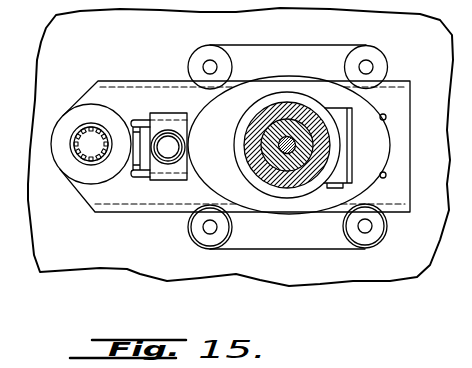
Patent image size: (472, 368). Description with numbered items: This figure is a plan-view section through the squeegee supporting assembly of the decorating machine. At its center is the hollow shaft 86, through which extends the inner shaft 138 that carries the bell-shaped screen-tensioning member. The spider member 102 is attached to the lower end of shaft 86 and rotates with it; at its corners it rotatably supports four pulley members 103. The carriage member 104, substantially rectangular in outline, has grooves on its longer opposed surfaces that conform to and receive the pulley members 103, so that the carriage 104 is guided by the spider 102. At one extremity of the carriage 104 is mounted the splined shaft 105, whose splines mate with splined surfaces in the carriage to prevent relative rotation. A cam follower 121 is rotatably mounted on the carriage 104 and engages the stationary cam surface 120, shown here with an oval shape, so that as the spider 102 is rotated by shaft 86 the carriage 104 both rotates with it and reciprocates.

The shaft 86 is at (257, 134).
The spider member 102 is at (309, 239).
The pulley members 103 is at (198, 53).
The carriage member 104 is at (411, 133).
The splined shaft 105 is at (74, 128).
The cam surface 120 is at (202, 182).
The cam follower 121 is at (163, 129).
The shaft 138 is at (300, 137).